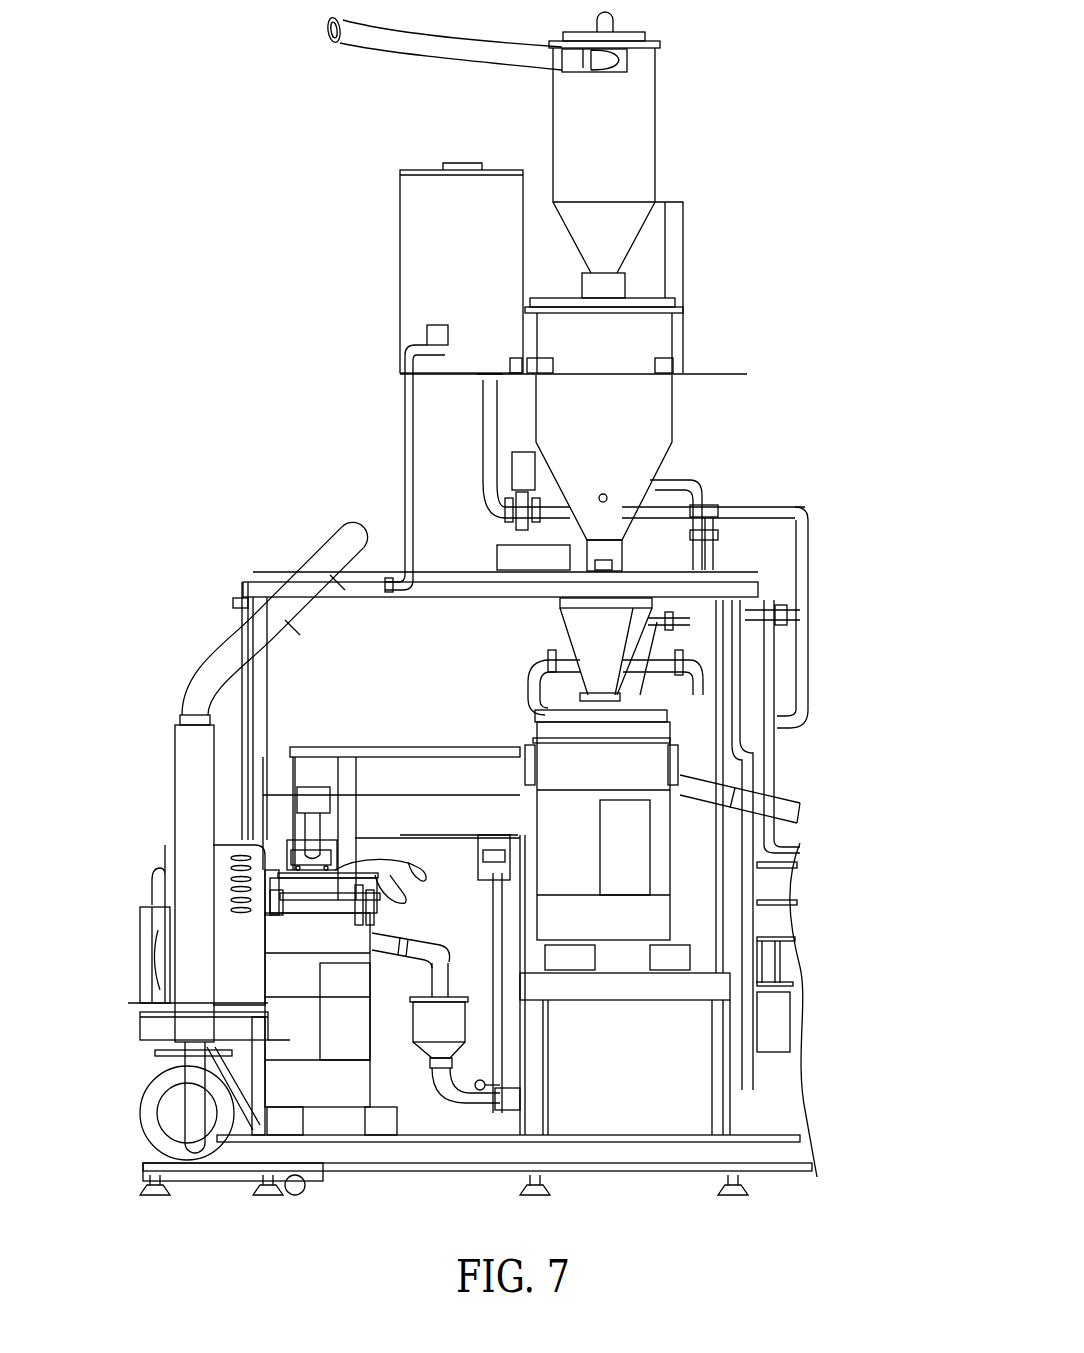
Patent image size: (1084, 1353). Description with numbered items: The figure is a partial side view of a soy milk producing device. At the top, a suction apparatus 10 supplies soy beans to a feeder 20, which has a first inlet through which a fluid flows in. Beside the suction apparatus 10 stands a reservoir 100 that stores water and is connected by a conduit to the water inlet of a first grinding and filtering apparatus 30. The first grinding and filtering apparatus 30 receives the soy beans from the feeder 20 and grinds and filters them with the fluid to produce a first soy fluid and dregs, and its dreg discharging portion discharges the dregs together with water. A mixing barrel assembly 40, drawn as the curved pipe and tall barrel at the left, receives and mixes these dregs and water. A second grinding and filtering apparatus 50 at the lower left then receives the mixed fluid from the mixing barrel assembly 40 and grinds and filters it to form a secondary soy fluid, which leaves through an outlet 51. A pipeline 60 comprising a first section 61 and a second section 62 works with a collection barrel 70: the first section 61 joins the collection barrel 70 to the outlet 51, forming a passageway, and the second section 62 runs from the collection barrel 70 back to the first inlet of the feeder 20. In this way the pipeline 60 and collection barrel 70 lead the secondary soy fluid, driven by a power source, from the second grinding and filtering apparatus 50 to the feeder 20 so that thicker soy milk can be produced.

The suction apparatus 10 is at (640, 102).
The reservoir 100 is at (412, 213).
The feeder 20 is at (653, 420).
The first grinding and filtering apparatus 30 is at (640, 763).
The mixing barrel assembly 40 is at (382, 768).
The second grinding and filtering apparatus 50 is at (330, 1100).
The outlet 51 is at (393, 948).
The pipeline 60 is at (536, 1048).
The first section 61 is at (440, 953).
The second section 62 is at (485, 1102).
The collection barrel 70 is at (453, 1018).